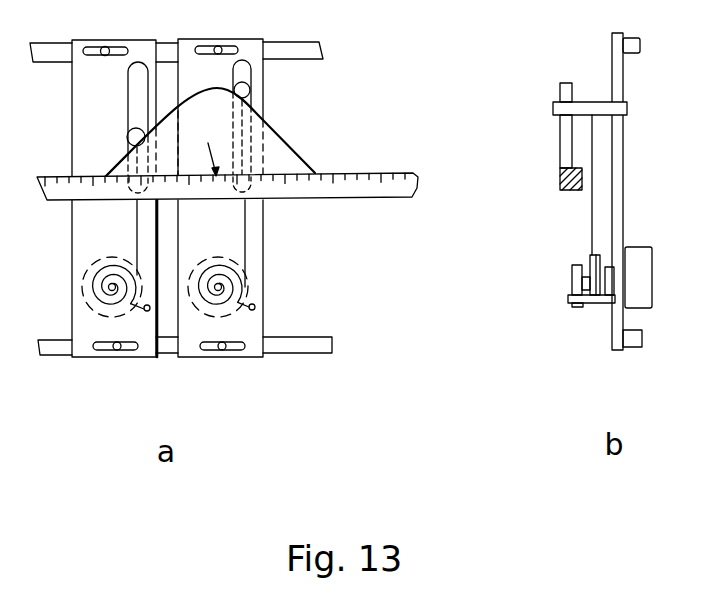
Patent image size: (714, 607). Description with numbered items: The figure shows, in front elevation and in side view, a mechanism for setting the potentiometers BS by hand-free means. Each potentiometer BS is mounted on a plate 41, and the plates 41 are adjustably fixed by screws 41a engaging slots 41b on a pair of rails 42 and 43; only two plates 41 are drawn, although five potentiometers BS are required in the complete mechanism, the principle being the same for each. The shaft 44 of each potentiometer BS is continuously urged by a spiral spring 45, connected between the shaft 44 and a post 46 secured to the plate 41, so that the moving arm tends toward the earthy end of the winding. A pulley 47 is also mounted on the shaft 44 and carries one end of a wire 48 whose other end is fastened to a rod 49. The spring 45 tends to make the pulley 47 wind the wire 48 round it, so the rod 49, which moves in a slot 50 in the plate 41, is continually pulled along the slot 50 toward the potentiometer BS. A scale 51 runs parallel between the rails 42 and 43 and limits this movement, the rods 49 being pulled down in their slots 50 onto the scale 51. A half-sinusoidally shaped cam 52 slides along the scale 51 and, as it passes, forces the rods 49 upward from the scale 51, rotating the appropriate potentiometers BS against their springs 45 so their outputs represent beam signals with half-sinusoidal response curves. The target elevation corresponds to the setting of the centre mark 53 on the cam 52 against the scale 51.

In FIG. 13a, the plate 41 is at (76, 231).
In FIG. 13b, the plate 41 is at (623, 207).
In FIG. 13a, the screw 41a is at (108, 47).
In FIG. 13b, the screw 41a is at (611, 50).
In FIG. 13a, the slot 41b is at (91, 47).
In FIG. 13a, the rail 42 is at (290, 43).
In FIG. 13b, the rail 42 is at (629, 36).
In FIG. 13a, the rail 43 is at (48, 356).
In FIG. 13b, the rail 43 is at (642, 337).
In FIG. 13a, the shaft 44 is at (112, 287).
In FIG. 13a, the spiral spring 45 is at (95, 266).
In FIG. 13b, the spiral spring 45 is at (573, 289).
In FIG. 13a, the post 46 is at (147, 311).
In FIG. 13b, the post 46 is at (595, 306).
In FIG. 13a, the pulley 47 is at (111, 262).
In FIG. 13b, the pulley 47 is at (593, 258).
In FIG. 13a, the wire 48 is at (246, 244).
In FIG. 13b, the wire 48 is at (593, 158).
In FIG. 13a, the rod 49 is at (127, 136).
In FIG. 13b, the rod 49 is at (553, 110).
In FIG. 13a, the slot 50 is at (131, 95).
In FIG. 13a, the scale 51 is at (402, 176).
In FIG. 13b, the scale 51 is at (568, 191).
In FIG. 13a, the cam 52 is at (281, 152).
In FIG. 13b, the cam 52 is at (561, 153).
In FIG. 13a, the centre mark 53 is at (211, 150).
In FIG. 13a, the potentiometer BS is at (85, 300).
In FIG. 13b, the potentiometer BS is at (652, 263).